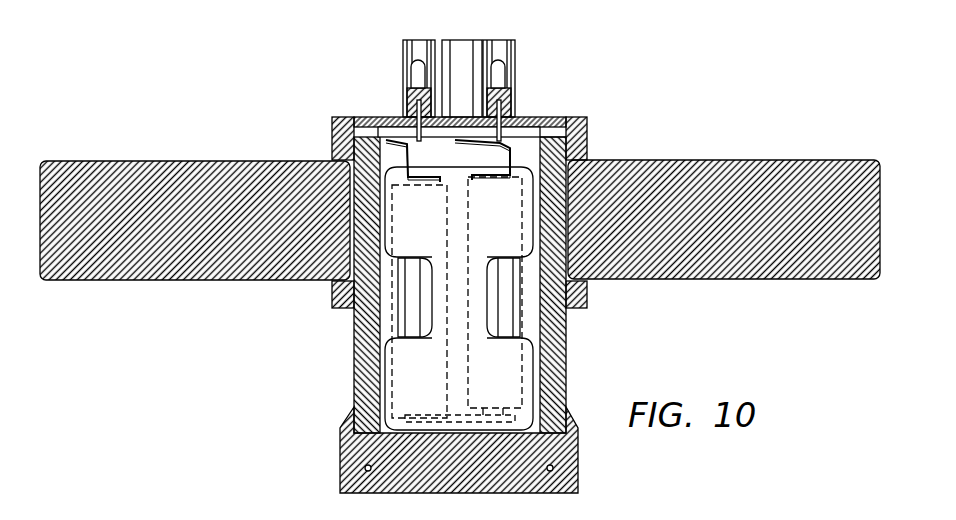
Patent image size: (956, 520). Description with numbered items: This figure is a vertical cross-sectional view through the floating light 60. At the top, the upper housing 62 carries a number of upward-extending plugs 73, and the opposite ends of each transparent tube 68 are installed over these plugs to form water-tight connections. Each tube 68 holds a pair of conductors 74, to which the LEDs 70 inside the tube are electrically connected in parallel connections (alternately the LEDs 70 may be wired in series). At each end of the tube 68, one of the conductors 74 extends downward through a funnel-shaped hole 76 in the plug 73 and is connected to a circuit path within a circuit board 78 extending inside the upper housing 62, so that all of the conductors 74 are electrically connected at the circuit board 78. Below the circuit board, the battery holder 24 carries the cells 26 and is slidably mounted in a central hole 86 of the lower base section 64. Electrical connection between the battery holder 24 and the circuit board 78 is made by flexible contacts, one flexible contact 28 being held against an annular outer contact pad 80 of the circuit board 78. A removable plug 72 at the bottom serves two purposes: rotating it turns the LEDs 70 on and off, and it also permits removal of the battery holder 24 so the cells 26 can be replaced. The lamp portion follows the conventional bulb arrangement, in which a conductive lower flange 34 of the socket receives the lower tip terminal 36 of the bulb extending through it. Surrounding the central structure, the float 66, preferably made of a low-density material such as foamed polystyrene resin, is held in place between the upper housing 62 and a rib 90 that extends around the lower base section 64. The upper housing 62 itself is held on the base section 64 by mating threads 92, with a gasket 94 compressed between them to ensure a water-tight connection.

The battery holder 24 is at (395, 393).
The cells 26 is at (397, 318).
The flexible contact 28 is at (333, 148).
The conductive lower flange 34 is at (482, 150).
The lower tip terminal 36 is at (446, 147).
The floating light 60 is at (225, 426).
The upper housing 62 is at (587, 126).
The lower base section 64 is at (565, 382).
The float 66 is at (723, 279).
The transparent tube 68 is at (517, 50).
The LEDs 70 is at (507, 80).
The removable plug 72 is at (578, 485).
The plug 73 is at (407, 115).
The conductors 74 is at (417, 40).
The funnel-shaped hole 76 is at (405, 92).
The circuit board 78 is at (355, 118).
The annular outer contact pad 80 is at (587, 143).
The central hole 86 is at (536, 328).
The rib 90 is at (587, 297).
The mating threads 92 is at (332, 132).
The gasket 94 is at (565, 116).